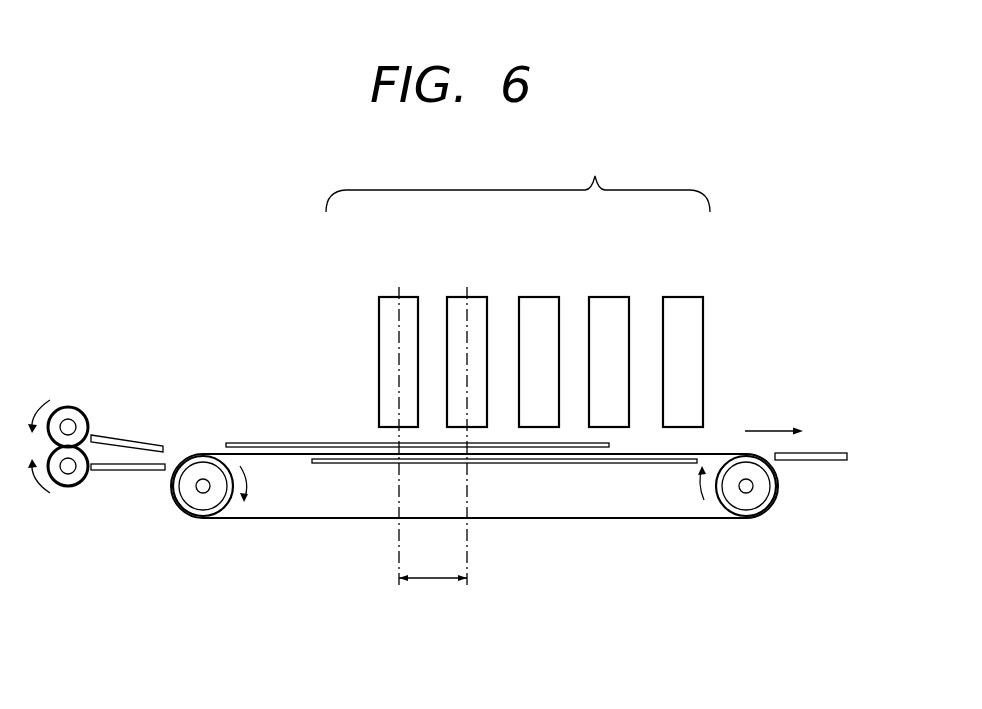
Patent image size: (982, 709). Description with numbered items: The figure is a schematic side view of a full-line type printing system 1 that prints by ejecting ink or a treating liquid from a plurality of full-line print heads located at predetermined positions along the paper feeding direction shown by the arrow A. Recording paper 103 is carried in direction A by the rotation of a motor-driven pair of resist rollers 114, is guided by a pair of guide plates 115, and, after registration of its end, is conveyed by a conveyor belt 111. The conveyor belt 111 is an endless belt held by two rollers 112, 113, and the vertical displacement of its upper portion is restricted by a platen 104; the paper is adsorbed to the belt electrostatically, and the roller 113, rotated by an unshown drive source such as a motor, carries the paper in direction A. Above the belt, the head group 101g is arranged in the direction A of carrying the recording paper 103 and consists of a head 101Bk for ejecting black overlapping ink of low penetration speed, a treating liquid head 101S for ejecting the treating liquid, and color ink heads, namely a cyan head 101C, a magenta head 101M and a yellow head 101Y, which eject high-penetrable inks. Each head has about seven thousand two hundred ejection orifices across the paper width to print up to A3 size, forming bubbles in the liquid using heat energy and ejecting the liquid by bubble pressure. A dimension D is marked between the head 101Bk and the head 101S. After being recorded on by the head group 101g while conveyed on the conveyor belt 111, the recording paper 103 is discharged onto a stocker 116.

The printing system 1 is at (184, 276).
The head group 101g is at (518, 180).
The head for ejecting black ink 101Bk is at (388, 297).
The treating liquid head 101S is at (462, 297).
The cyan head 101C is at (546, 297).
The magenta head 101M is at (614, 297).
The yellow head 101Y is at (688, 297).
The recording paper 103 is at (295, 442).
The platen 104 is at (513, 463).
The conveyor belt 111 is at (513, 518).
The roller 112 is at (197, 503).
The roller 113 is at (738, 503).
The pair of resist rollers 114 is at (78, 408).
The pair of guide plates 115 is at (128, 437).
The stocker 116 is at (820, 462).
The arrow indicating direction of feeding recording paper A is at (774, 419).
The head spacing distance D is at (433, 567).